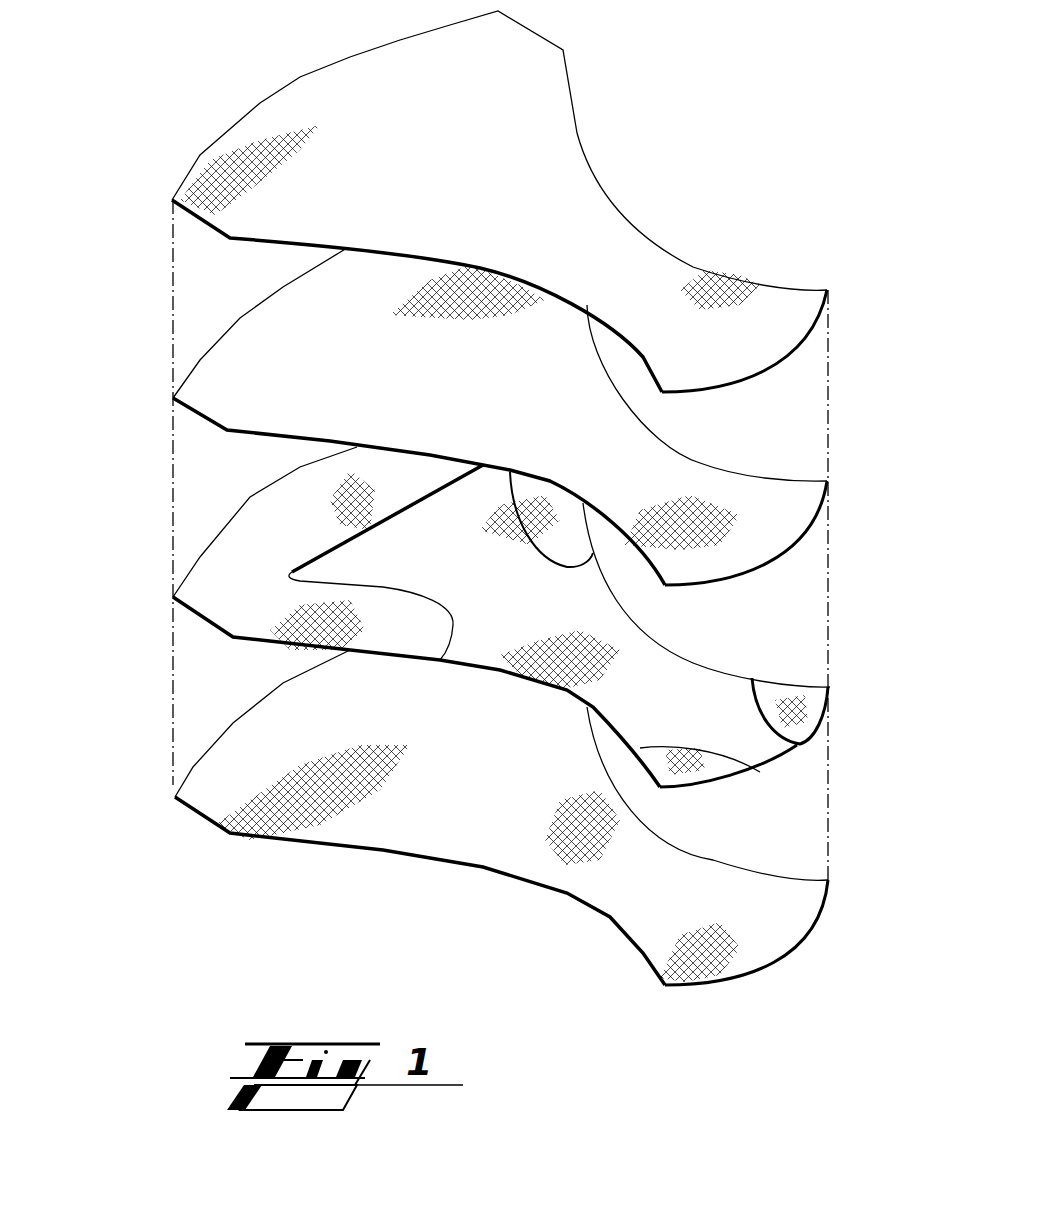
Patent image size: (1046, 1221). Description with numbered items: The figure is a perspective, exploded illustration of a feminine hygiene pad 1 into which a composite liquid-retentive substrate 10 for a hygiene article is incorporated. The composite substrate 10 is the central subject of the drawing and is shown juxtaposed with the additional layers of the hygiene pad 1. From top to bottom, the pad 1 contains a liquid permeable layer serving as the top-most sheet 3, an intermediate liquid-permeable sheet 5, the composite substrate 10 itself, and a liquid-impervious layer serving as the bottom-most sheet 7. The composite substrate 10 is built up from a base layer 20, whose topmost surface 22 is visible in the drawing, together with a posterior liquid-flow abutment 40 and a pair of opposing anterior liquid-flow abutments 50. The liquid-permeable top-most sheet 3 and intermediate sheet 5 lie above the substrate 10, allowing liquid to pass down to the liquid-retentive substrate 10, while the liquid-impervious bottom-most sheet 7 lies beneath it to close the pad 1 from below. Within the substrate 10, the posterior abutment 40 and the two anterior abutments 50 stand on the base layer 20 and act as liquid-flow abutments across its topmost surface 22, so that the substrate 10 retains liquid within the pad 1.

The hygiene pad 1 is at (103, 227).
The top-most sheet 3 is at (567, 163).
The intermediate liquid-permeable sheet 5 is at (215, 390).
The bottom-most sheet 7 is at (430, 833).
The composite liquid-retentive substrate 10 is at (760, 647).
The base layer 20 is at (617, 658).
The topmost surface 22 is at (529, 601).
The posterior liquid-flow abutment 40 is at (203, 588).
The anterior liquid-flow abutments 50 is at (680, 778).